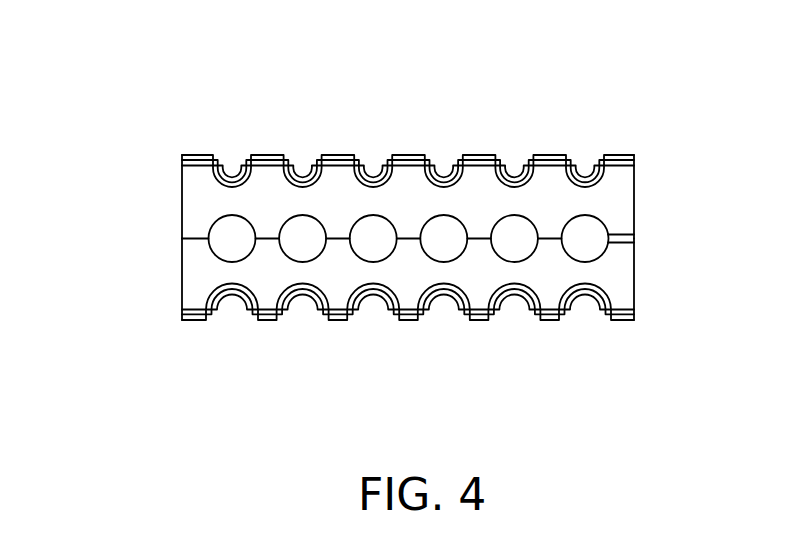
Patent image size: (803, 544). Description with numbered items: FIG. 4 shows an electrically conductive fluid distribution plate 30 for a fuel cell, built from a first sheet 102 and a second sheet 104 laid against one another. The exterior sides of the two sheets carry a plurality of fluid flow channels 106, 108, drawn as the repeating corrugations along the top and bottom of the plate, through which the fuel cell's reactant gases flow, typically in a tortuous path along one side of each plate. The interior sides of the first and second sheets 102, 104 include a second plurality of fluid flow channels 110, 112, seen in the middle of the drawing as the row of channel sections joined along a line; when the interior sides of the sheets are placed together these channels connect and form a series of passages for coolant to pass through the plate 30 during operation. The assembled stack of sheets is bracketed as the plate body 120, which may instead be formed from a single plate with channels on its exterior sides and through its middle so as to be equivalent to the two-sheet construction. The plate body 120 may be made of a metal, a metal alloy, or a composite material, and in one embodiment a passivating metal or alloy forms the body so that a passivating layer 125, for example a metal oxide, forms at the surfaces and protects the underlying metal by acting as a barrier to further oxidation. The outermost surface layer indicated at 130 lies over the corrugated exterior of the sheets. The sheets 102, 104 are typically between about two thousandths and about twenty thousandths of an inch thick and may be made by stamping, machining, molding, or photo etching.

The electrically conductive fluid distribution plate 30 is at (152, 139).
The first sheet 102 is at (636, 194).
The second sheet 104 is at (636, 280).
The fluid flow channels 106 is at (447, 183).
The fluid flow channels 108 is at (447, 297).
The fluid flow channels 110 is at (607, 229).
The fluid flow channels 112 is at (607, 246).
The plate body 120 is at (148, 156).
The passivating layer 125 is at (636, 160).
The outer coating layer 130 is at (611, 158).